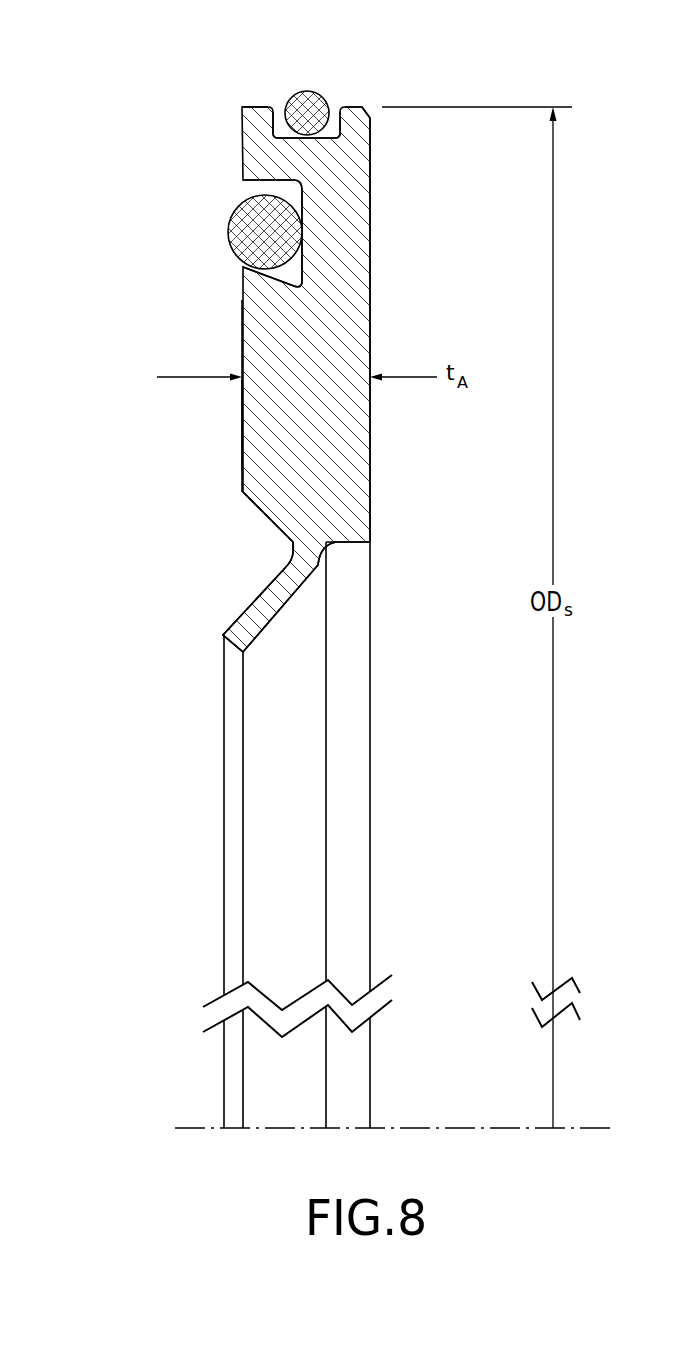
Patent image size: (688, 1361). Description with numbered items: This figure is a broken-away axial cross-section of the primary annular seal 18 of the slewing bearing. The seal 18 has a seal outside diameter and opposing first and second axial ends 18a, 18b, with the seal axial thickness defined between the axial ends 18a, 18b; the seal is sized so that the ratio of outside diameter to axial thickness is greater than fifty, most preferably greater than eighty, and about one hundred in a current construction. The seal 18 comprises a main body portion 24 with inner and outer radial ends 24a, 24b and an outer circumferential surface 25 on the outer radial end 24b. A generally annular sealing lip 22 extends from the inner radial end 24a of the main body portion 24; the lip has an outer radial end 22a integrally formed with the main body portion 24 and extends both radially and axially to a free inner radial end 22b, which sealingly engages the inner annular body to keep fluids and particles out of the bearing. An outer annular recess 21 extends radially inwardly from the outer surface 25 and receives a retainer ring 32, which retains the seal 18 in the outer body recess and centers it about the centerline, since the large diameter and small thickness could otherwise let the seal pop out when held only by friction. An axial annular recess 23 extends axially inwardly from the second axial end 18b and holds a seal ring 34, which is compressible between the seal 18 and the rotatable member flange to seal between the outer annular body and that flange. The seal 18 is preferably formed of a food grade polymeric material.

The primary annular seal 18 is at (118, 483).
The first axial end 18a is at (232, 303).
The second axial end 18b is at (383, 295).
The outer annular recess 21 is at (276, 122).
The sealing lip 22 is at (238, 591).
The outer radial end of sealing lip 22a is at (307, 533).
The free inner radial end of sealing lip 22b is at (233, 650).
The axial annular recess 23 is at (262, 188).
The main body portion 24 is at (232, 427).
The inner radial end of main body portion 24a is at (349, 543).
The outer radial end of main body portion 24b is at (258, 107).
The outer circumferential surface 25 is at (352, 107).
The retainer ring 32 is at (304, 98).
The seal ring 34 is at (243, 228).